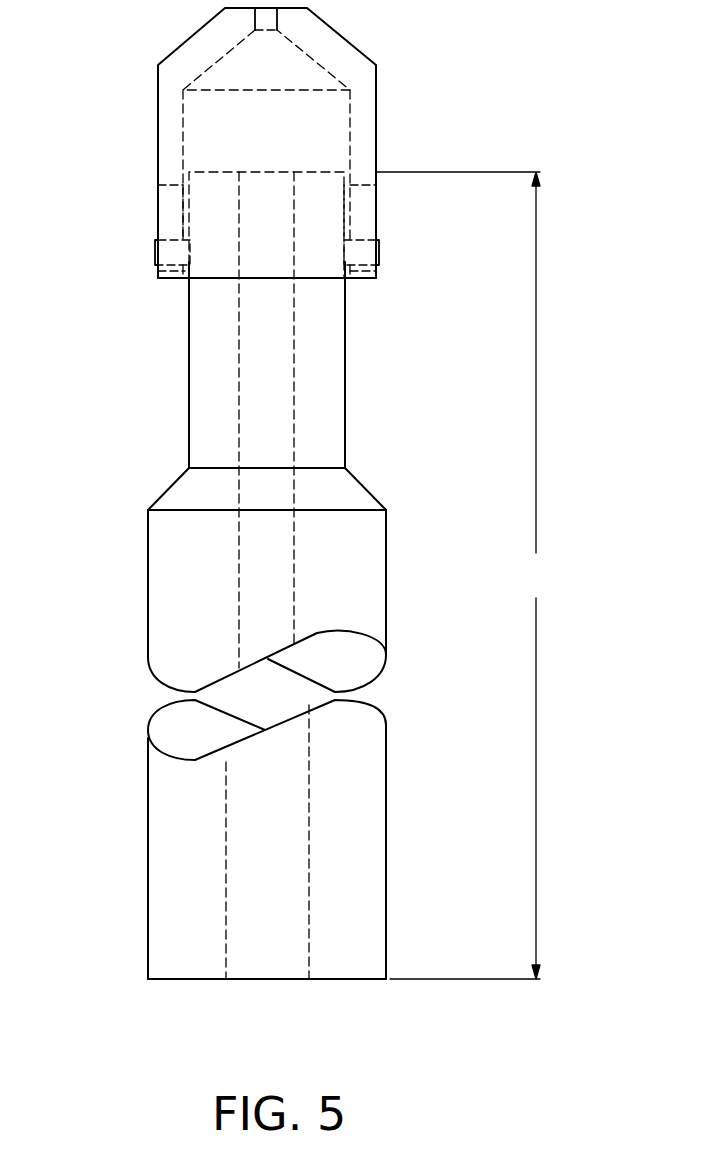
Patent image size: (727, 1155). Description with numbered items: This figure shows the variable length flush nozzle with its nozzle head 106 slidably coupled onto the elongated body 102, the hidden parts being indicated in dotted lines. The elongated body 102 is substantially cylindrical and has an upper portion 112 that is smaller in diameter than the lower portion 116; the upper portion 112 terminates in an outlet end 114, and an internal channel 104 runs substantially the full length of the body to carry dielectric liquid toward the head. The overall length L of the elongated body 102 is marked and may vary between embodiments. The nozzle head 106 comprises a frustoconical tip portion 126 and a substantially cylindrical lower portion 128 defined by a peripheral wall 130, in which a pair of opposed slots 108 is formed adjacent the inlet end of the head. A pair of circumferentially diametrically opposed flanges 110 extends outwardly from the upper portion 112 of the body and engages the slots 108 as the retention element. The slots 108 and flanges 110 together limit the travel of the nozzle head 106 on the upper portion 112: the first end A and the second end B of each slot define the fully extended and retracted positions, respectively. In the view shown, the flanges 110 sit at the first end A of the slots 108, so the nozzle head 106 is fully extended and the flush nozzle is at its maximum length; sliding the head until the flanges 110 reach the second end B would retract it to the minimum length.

The elongated body 102 is at (148, 616).
The internal channel 104 is at (265, 973).
The nozzle head 106 is at (376, 107).
The pair of opposed slots 108 is at (160, 216).
The pair of opposed flanges 110 is at (152, 250).
The upper portion 112 is at (345, 370).
The outlet end 114 is at (273, 170).
The lower portion 116 is at (387, 848).
The frustoconical tip portion 126 is at (337, 31).
The substantially cylindrical lower portion 128 is at (157, 118).
The peripheral wall 130 is at (157, 186).
The first end A is at (378, 278).
The second end B is at (368, 186).
The length L is at (466, 575).